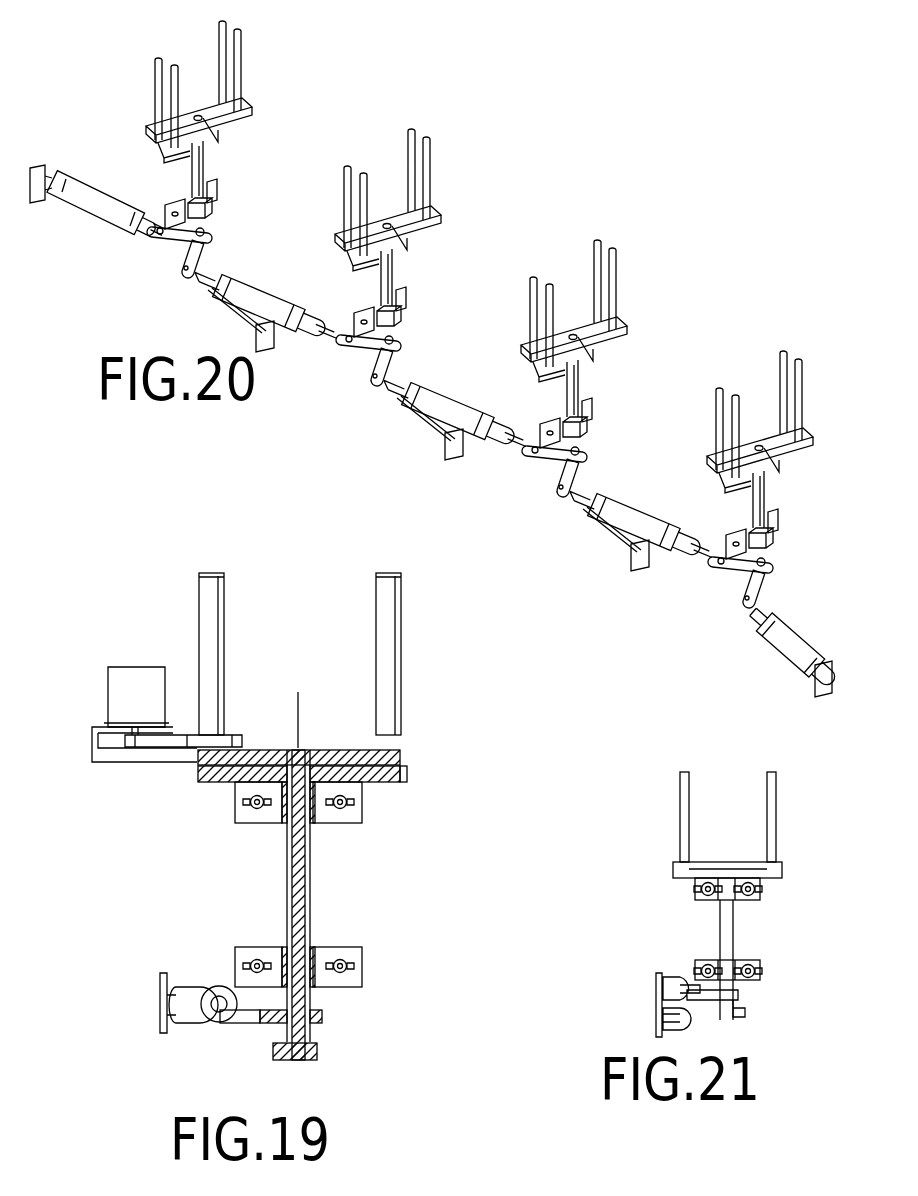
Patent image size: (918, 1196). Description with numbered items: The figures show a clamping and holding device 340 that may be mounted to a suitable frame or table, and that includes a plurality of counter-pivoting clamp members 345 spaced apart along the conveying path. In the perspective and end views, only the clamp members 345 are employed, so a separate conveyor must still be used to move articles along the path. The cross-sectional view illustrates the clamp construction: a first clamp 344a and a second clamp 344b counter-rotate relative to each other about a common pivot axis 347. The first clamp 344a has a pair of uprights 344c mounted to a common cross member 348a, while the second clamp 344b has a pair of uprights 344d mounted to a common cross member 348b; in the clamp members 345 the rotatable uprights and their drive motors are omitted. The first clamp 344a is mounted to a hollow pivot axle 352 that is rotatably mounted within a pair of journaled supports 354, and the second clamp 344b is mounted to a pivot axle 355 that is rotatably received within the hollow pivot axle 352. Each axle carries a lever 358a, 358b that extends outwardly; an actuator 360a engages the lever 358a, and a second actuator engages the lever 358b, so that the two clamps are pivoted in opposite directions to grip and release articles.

In FIG. 20, the clamping and holding device 340 is at (440, 359).
In FIG. 21, the clamping and holding device 340 is at (657, 904).
In FIG. 20, the counter-pivoting clamp member 345 is at (260, 96).
In FIG. 19, the counter-pivoting clamp member 345 is at (332, 762).
In FIG. 21, the counter-pivoting clamp member 345 is at (660, 872).
In FIG. 19, the first clamp 344a is at (217, 783).
In FIG. 19, the second clamp 344b is at (268, 745).
In FIG. 19, the uprights 344c is at (406, 633).
In FIG. 19, the uprights 344d is at (198, 625).
In FIG. 19, the common pivot axis 347 is at (298, 712).
In FIG. 19, the cross member 348a is at (398, 781).
In FIG. 19, the cross member 348b is at (252, 748).
In FIG. 19, the hollow pivot axle 352 is at (311, 888).
In FIG. 19, the journaled supports 354 is at (257, 946).
In FIG. 19, the pivot axle 355 is at (301, 855).
In FIG. 19, the lever 358a is at (237, 1024).
In FIG. 19, the lever 358b is at (318, 1052).
In FIG. 19, the actuator 360a is at (192, 988).